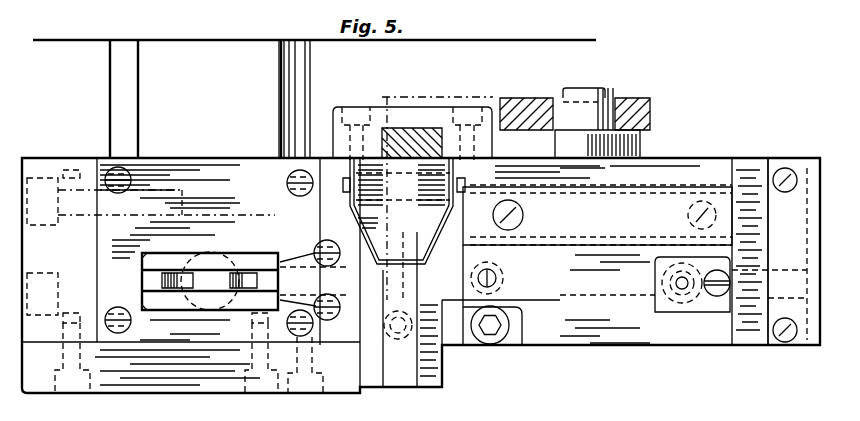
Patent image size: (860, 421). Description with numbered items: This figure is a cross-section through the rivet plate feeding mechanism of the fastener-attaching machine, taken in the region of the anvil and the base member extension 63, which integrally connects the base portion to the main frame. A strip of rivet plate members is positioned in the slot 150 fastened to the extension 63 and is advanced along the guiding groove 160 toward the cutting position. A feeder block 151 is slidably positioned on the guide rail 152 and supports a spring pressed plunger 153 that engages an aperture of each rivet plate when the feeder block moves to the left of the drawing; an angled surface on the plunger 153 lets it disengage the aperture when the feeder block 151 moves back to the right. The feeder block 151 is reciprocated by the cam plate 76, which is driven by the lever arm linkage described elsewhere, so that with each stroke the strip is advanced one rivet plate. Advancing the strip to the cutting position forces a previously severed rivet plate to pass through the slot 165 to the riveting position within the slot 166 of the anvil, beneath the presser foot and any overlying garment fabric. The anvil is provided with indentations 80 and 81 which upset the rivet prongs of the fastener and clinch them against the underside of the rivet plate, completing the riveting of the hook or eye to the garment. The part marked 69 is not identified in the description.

The extension 63 is at (159, 99).
The cam plate 76 is at (635, 114).
The feeder block 151 is at (725, 153).
The guide rail 152 is at (537, 211).
The guiding groove 160 is at (450, 288).
The spring pressed plunger 153 is at (682, 290).
The slot 150 is at (778, 302).
The slot 165 is at (295, 262).
The disc 69 is at (182, 246).
The indentation 81 is at (242, 276).
The slot of the anvil 166 is at (147, 275).
The indentation 80 is at (183, 272).